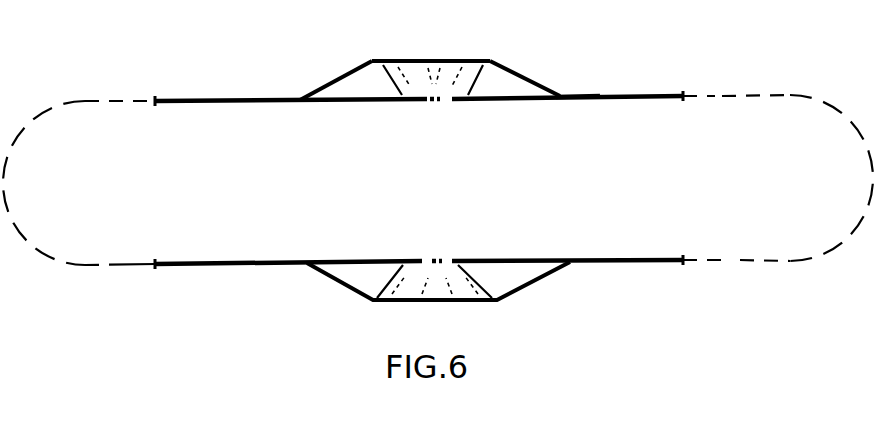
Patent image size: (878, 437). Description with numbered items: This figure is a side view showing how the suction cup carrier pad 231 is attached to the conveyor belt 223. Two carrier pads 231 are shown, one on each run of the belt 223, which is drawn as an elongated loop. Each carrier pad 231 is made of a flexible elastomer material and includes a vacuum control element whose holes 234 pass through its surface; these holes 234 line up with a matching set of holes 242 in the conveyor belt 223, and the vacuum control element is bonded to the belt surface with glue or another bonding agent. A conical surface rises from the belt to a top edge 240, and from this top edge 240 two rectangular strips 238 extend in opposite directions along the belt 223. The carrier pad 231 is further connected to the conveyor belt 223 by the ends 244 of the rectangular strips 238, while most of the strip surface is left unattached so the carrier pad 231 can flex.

The conveyor belt 223 is at (640, 265).
The suction cup carrier pad 231 is at (423, 181).
The holes 234 is at (437, 96).
The rectangular strips 238 is at (549, 93).
The top edge 240 is at (492, 58).
The holes 242 is at (446, 101).
The ends 244 is at (293, 96).